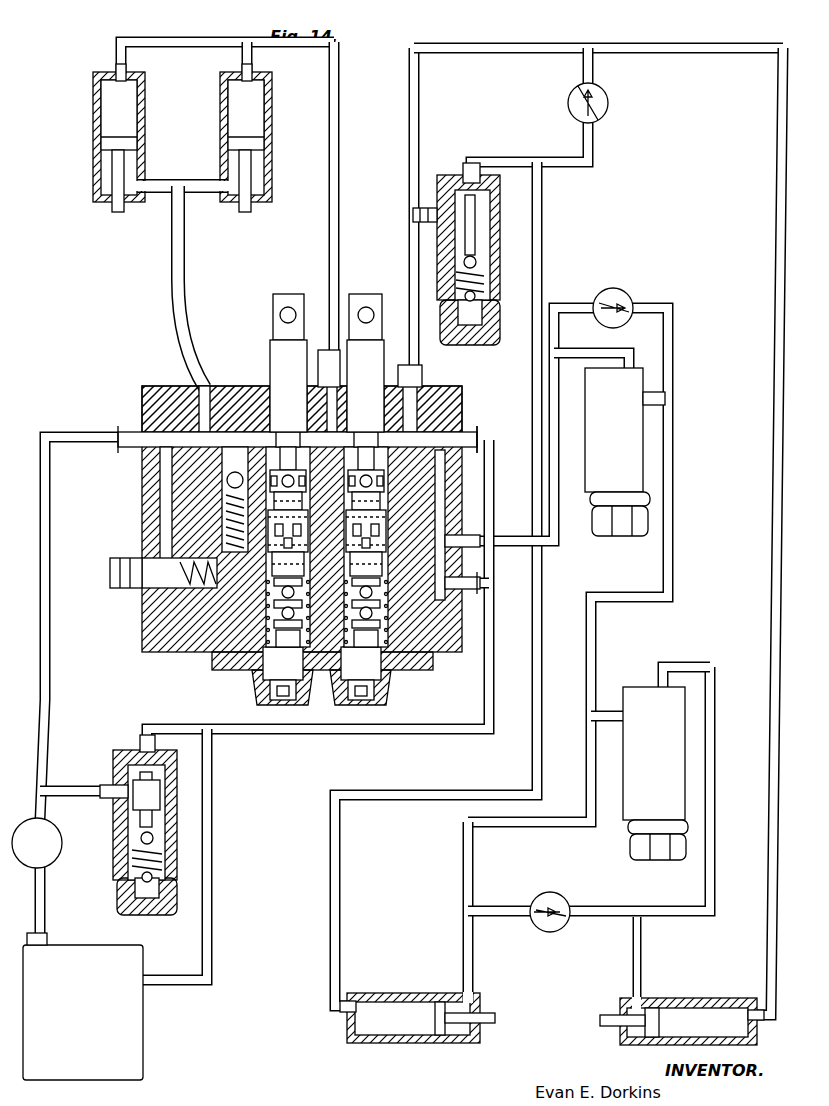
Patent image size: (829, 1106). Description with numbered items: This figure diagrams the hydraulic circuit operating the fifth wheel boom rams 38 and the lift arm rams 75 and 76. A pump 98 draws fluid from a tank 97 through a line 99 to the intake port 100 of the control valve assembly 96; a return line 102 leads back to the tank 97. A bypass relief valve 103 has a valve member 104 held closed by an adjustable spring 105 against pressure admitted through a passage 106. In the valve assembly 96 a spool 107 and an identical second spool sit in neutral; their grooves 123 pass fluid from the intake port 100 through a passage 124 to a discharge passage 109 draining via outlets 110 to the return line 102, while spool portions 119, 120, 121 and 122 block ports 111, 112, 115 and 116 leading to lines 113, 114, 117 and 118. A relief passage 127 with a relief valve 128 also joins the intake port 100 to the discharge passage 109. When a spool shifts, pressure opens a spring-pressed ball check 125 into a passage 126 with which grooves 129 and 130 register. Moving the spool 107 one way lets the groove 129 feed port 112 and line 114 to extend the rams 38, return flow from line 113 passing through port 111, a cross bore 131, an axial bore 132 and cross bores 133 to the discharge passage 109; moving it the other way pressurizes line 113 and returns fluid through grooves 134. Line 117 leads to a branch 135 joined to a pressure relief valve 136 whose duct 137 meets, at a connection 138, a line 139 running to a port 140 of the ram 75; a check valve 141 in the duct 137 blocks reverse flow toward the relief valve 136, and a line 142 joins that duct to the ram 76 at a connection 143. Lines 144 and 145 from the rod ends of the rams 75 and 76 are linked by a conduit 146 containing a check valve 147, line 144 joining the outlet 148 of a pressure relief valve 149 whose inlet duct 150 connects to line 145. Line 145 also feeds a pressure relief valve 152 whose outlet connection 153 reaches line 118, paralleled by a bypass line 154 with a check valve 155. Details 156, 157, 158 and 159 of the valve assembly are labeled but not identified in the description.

The hydraulic rams 38 is at (93, 125).
The hydraulic ram 75 is at (682, 1006).
The hydraulic ram 76 is at (397, 1001).
The control valve assembly 96 is at (305, 499).
The tank 97 is at (143, 1025).
The pump 98 is at (50, 862).
The line 99 is at (50, 508).
The intake port 100 is at (122, 428).
The return line 102 is at (213, 865).
The relief valve 103 is at (144, 823).
The valve member 104 is at (152, 778).
The adjustable spring 105 is at (160, 854).
The passage 106 is at (108, 800).
The control spool 107 is at (270, 343).
The passage 109 is at (445, 494).
The outlets 110 is at (478, 438).
The port 111 is at (296, 530).
The port 112 is at (304, 556).
The line 113 is at (186, 258).
The line 114 is at (339, 214).
The port 115 is at (382, 500).
The port 116 is at (384, 588).
The line 117 is at (408, 278).
The line 118 is at (518, 548).
The spool portion 119 is at (274, 506).
The spool portion 120 is at (282, 543).
The spool portion 121 is at (388, 484).
The spool portion 122 is at (384, 566).
The grooves 123 is at (290, 428).
The passage 124 is at (168, 388).
The spring-pressed ball check 125 is at (231, 474).
The passage 126 is at (386, 520).
The relief passage 127 is at (160, 516).
The relief valve 128 is at (142, 600).
The groove 129 is at (272, 580).
The groove 130 is at (386, 544).
The cross bore 131 is at (288, 470).
The axial bore 132 is at (302, 612).
The cross bores 133 is at (283, 672).
The grooves 134 is at (270, 604).
The branch connection 135 is at (413, 216).
The pressure relief valve 136 is at (450, 254).
The duct 137 is at (515, 157).
The connection 138 is at (580, 54).
The line 139 is at (677, 62).
The port 140 is at (756, 1008).
The check valve 141 is at (561, 112).
The line 142 is at (450, 790).
The connection 143 is at (342, 1012).
The line 144 is at (641, 948).
The line 145 is at (473, 955).
The conduit 146 is at (610, 909).
The check valve 147 is at (589, 780).
The outlet 148 is at (666, 668).
The pressure relief valve 149 is at (638, 795).
The duct 150 is at (596, 716).
The pressure relief valve 152 is at (612, 514).
The connection 153 is at (625, 465).
The bypass line 154 is at (673, 368).
The check valve 155 is at (634, 298).
The seat 156 is at (384, 604).
The valve ball 157 is at (384, 616).
The valve seat 158 is at (388, 476).
The port 159 is at (386, 532).